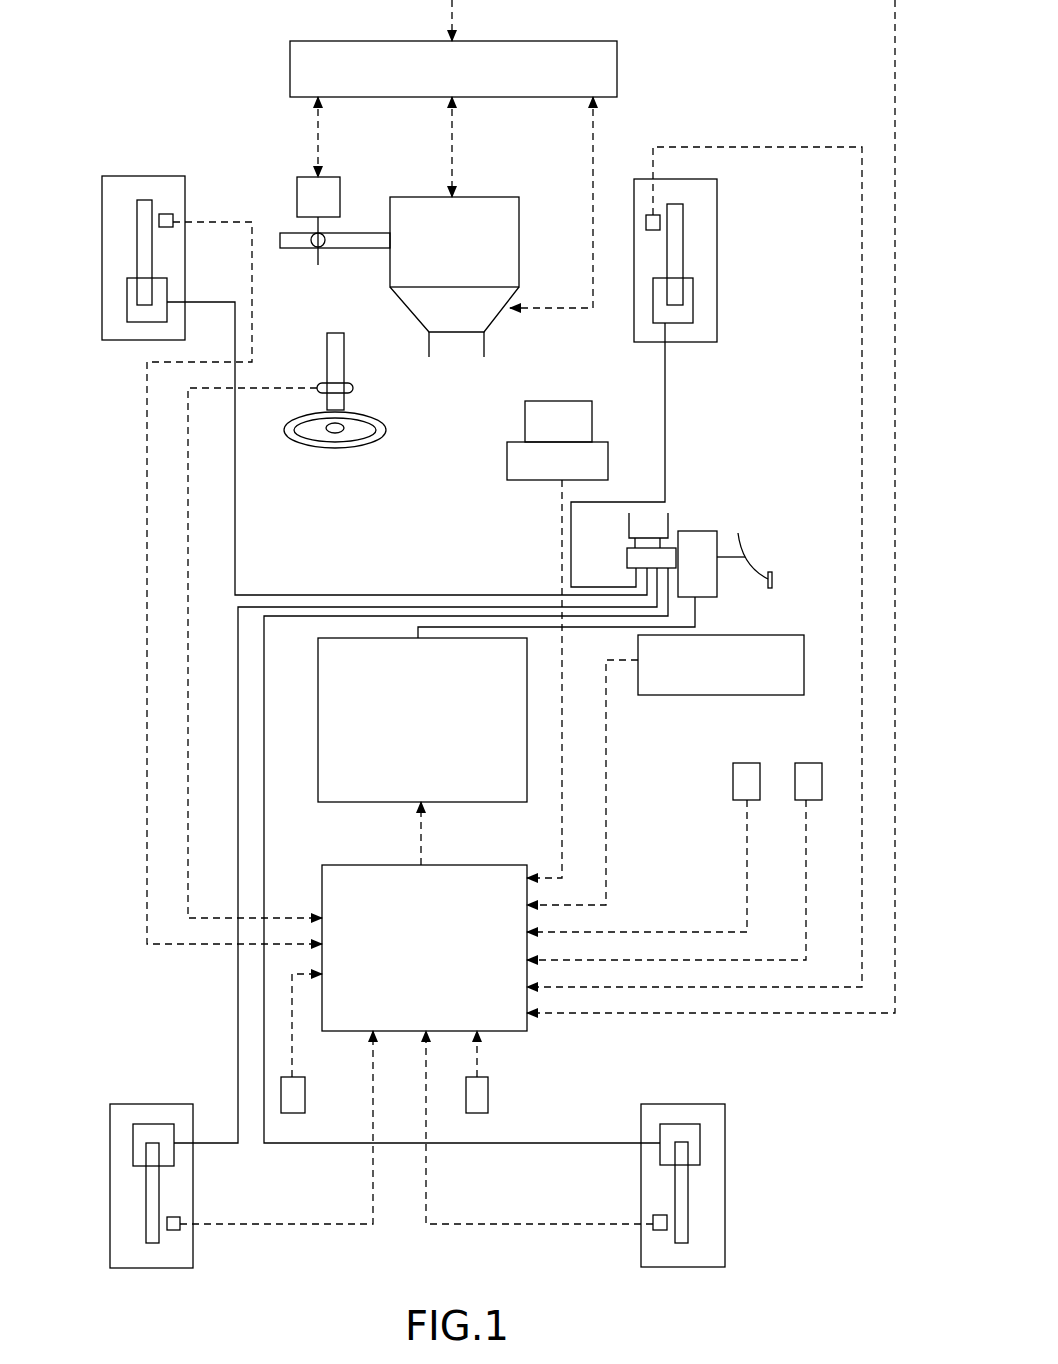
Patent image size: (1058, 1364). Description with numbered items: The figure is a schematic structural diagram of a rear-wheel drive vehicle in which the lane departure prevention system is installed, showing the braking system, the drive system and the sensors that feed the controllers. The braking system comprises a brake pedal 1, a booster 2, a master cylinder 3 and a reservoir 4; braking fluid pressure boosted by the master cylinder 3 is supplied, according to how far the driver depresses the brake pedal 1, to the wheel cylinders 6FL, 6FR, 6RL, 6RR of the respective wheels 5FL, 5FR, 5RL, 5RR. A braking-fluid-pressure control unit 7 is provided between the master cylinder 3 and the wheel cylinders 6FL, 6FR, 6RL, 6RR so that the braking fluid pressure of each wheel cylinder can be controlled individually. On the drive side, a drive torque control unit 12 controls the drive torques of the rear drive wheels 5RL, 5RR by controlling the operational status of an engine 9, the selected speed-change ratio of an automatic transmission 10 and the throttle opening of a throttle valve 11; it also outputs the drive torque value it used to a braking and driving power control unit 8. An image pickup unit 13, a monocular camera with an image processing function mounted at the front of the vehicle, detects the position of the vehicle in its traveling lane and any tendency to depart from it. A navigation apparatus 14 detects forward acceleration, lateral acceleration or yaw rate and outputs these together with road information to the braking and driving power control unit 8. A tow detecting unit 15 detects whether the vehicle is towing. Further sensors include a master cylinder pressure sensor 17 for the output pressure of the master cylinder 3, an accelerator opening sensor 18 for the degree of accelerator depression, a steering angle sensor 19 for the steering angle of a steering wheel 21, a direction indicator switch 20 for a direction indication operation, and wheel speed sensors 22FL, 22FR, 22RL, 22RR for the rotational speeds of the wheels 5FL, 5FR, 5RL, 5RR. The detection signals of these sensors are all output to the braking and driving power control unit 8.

The brake pedal 1 is at (774, 584).
The booster 2 is at (717, 585).
The master cylinder 3 is at (627, 557).
The reservoir 4 is at (629, 527).
The front left wheel 5FL is at (185, 195).
The front right wheel 5FR is at (717, 220).
The rear left wheel 5RL is at (146, 1104).
The rear right wheel 5RR is at (680, 1104).
The front left wheel cylinder 6FL is at (127, 298).
The front right wheel cylinder 6FR is at (693, 300).
The rear left wheel cylinder 6RL is at (133, 1140).
The rear right wheel cylinder 6RR is at (700, 1143).
The braking-fluid-pressure control unit 7 is at (318, 716).
The braking and driving power control unit 8 is at (333, 865).
The engine 9 is at (500, 197).
The automatic transmission 10 is at (393, 297).
The throttle valve 11 is at (314, 256).
The drive torque control unit 12 is at (617, 77).
The image pickup unit 13 is at (608, 458).
The navigation apparatus 14 is at (660, 697).
The tow detecting unit 15 is at (305, 1096).
The master cylinder pressure sensor 17 is at (743, 763).
The accelerator opening sensor 18 is at (803, 763).
The steering angle sensor 19 is at (353, 388).
The direction indicator switch 20 is at (488, 1095).
The steering wheel 21 is at (386, 430).
The front left wheel speed sensor 22FL is at (173, 228).
The front right wheel speed sensor 22FR is at (646, 222).
The rear left wheel speed sensor 22RL is at (180, 1230).
The rear right wheel speed sensor 22RR is at (653, 1228).